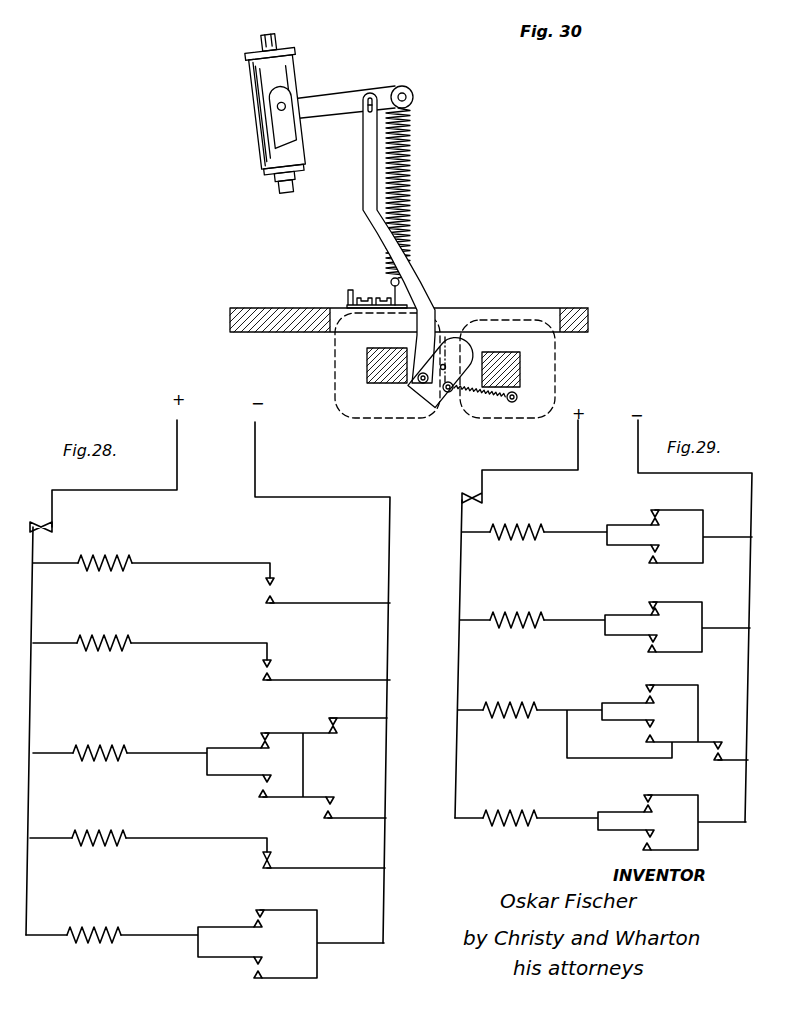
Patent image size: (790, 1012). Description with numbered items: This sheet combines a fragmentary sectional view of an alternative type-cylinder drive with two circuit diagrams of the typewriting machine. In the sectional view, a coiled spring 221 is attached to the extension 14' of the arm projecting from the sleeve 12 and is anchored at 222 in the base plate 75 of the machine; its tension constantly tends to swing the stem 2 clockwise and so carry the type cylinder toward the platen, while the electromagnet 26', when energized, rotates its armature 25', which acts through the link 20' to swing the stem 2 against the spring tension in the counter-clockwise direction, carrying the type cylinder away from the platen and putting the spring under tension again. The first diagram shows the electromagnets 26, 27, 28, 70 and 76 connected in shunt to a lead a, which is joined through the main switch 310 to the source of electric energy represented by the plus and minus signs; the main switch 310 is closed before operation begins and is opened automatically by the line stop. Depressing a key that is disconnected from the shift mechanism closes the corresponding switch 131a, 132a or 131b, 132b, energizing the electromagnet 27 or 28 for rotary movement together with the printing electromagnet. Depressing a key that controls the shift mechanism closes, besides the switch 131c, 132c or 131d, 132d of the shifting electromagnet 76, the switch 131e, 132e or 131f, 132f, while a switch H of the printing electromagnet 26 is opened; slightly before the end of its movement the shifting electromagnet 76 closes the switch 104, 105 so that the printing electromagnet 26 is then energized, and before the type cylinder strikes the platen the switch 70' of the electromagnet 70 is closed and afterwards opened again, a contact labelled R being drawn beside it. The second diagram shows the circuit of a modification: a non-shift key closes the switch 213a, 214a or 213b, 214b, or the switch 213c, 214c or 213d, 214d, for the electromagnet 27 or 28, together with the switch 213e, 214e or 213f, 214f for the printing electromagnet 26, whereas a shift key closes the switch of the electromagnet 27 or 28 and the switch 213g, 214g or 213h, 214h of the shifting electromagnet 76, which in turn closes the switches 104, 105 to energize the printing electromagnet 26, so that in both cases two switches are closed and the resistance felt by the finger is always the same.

In FIG. 30, the stem 2 is at (276, 40).
In FIG. 30, the sleeve 12 is at (250, 93).
In FIG. 30, the extension of the arm 14' is at (352, 87).
In FIG. 30, the coiled spring 221 is at (412, 177).
In FIG. 30, the link 20' is at (414, 238).
In FIG. 30, the spring anchorage 222 is at (403, 297).
In FIG. 30, the base plate 75 is at (260, 333).
In FIG. 30, the armature 25' is at (441, 391).
In FIG. 30, the electromagnet 26' is at (445, 390).
In FIG. 28, the main switch 310 is at (37, 519).
In FIG. 28, the lead a is at (33, 620).
In FIG. 29, the lead a is at (460, 658).
In FIG. 28, the electromagnet for imparting rotary movement 27 is at (116, 552).
In FIG. 29, the electromagnet for imparting rotary movement 27 is at (530, 522).
In FIG. 28, the electromagnet for imparting rotary movement 28 is at (112, 630).
In FIG. 29, the electromagnet for imparting rotary movement 28 is at (528, 610).
In FIG. 28, the printing electromagnet 26 is at (100, 743).
In FIG. 29, the printing electromagnet 26 is at (510, 699).
In FIG. 28, the electromagnet 70 is at (99, 827).
In FIG. 28, the shifting electromagnet 76 is at (95, 924).
In FIG. 29, the shifting electromagnet 76 is at (517, 804).
In FIG. 28, the switch contact 132a is at (272, 581).
In FIG. 28, the switch contact 131a is at (276, 600).
In FIG. 28, the switch contact 132b is at (271, 662).
In FIG. 28, the switch contact 131b is at (261, 678).
In FIG. 28, the switch contact 132e is at (259, 732).
In FIG. 28, the switch contact 131e is at (259, 743).
In FIG. 28, the switch contact 131f is at (275, 770).
In FIG. 28, the switch contact 132f is at (263, 800).
In FIG. 28, the switch contact 104 is at (345, 793).
In FIG. 29, the switch contact 104 is at (731, 738).
In FIG. 28, the switch contact 105 is at (330, 823).
In FIG. 29, the switch contact 105 is at (718, 764).
In FIG. 28, the switch H is at (338, 728).
In FIG. 28, the switch 70' is at (250, 863).
In FIG. 28, the contact R is at (275, 862).
In FIG. 28, the switch contact 132c is at (253, 912).
In FIG. 28, the switch contact 131c is at (266, 926).
In FIG. 28, the switch contact 131d is at (266, 962).
In FIG. 28, the switch contact 132d is at (252, 977).
In FIG. 29, the switch contact 213a is at (650, 512).
In FIG. 29, the switch contact 214a is at (676, 526).
In FIG. 29, the switch contact 214b is at (677, 546).
In FIG. 29, the switch contact 213b is at (648, 565).
In FIG. 29, the switch contact 213c is at (650, 604).
In FIG. 29, the switch contact 214c is at (675, 616).
In FIG. 29, the switch contact 214d is at (672, 636).
In FIG. 29, the switch contact 213d is at (648, 650).
In FIG. 29, the switch contact 213e is at (647, 689).
In FIG. 29, the switch contact 214e is at (670, 702).
In FIG. 29, the switch contact 214f is at (670, 722).
In FIG. 29, the switch contact 213f is at (646, 741).
In FIG. 29, the switch contact 213g is at (645, 797).
In FIG. 29, the switch contact 214g is at (668, 810).
In FIG. 29, the switch contact 214h is at (669, 828).
In FIG. 29, the switch contact 213h is at (642, 849).